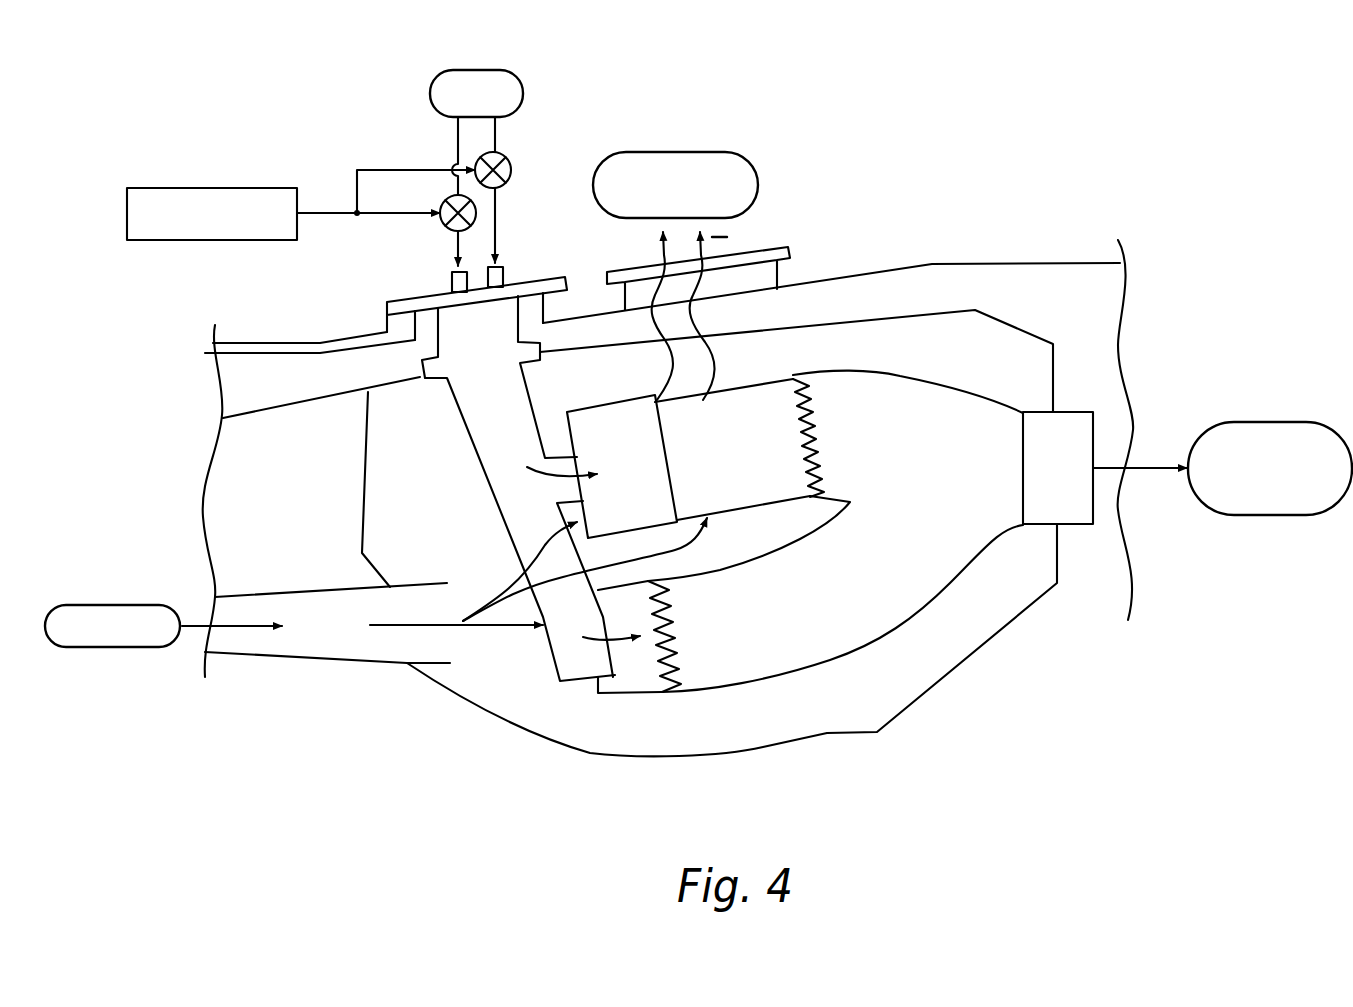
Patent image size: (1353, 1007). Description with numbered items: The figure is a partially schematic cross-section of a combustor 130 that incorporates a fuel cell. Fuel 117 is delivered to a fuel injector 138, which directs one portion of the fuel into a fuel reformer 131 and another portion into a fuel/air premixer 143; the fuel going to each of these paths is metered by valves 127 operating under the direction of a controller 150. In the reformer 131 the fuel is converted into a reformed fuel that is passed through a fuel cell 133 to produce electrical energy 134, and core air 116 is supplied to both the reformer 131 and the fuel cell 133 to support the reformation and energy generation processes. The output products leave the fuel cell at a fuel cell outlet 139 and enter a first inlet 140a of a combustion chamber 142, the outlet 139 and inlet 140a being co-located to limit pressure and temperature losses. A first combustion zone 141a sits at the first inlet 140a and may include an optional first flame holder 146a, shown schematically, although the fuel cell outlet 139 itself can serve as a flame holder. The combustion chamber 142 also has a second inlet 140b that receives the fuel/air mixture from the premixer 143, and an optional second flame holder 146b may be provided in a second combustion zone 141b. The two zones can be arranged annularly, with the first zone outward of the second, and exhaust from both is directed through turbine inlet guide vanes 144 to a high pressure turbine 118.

The core air 116 is at (107, 648).
The fuel 117 is at (472, 70).
The high pressure turbine 118 is at (1273, 420).
The valves 127 is at (440, 225).
The combustor 130 is at (965, 250).
The fuel reformer 131 is at (607, 400).
The fuel cell 133 is at (747, 400).
The electrical energy 134 is at (660, 150).
The fuel injector 138 is at (468, 428).
The fuel cell outlet 139 is at (810, 386).
The first inlet 140a is at (807, 378).
The second inlet 140b is at (660, 693).
The first combustion zone 141a is at (912, 439).
The second combustion zone 141b is at (773, 637).
The combustion chamber 142 is at (923, 608).
The fuel/air premixer 143 is at (620, 693).
The turbine inlet guide vanes 144 is at (1078, 527).
The first flame holder 146a is at (817, 440).
The second flame holder 146b is at (677, 660).
The controller 150 is at (172, 240).